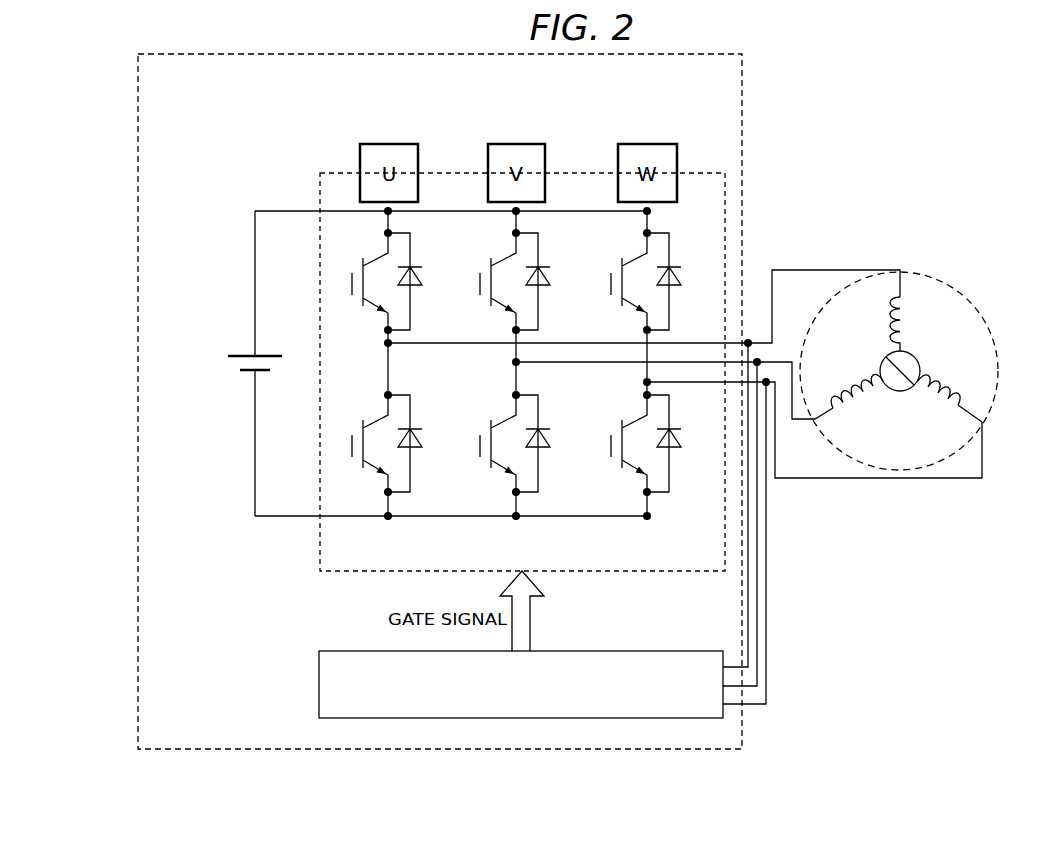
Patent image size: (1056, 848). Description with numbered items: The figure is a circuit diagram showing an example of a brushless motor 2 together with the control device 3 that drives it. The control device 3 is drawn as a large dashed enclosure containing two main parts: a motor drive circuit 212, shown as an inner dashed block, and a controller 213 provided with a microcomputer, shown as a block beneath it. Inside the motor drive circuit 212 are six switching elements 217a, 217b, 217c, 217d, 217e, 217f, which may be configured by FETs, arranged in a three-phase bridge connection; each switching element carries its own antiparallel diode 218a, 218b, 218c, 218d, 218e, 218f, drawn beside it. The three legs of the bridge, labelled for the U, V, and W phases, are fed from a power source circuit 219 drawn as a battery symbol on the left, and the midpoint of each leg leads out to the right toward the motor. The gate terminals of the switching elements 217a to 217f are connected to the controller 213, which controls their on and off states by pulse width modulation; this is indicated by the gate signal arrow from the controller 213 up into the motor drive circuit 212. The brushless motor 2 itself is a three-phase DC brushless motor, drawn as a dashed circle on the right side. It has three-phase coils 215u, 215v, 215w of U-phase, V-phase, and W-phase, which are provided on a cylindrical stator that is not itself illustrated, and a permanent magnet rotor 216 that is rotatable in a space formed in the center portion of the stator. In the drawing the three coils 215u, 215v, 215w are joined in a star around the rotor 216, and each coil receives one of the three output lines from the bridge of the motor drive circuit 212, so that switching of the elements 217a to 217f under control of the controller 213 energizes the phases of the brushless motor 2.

The brushless motor 2 is at (960, 253).
The control device 3 is at (135, 153).
The motor drive circuit 212 is at (320, 557).
The controller 213 is at (319, 680).
The U-phase coil 215u is at (917, 322).
The V-phase coil 215v is at (858, 410).
The W-phase coil 215w is at (940, 418).
The permanent magnet rotor 216 is at (910, 391).
The switching element 217a is at (362, 277).
The switching element 217b is at (362, 438).
The switching element 217c is at (490, 277).
The switching element 217d is at (492, 439).
The switching element 217e is at (621, 277).
The switching element 217f is at (622, 439).
The antiparallel diode 218a is at (417, 275).
The antiparallel diode 218b is at (417, 436).
The antiparallel diode 218c is at (548, 276).
The antiparallel diode 218d is at (549, 437).
The antiparallel diode 218e is at (680, 276).
The antiparallel diode 218f is at (680, 437).
The power source circuit 219 is at (242, 362).